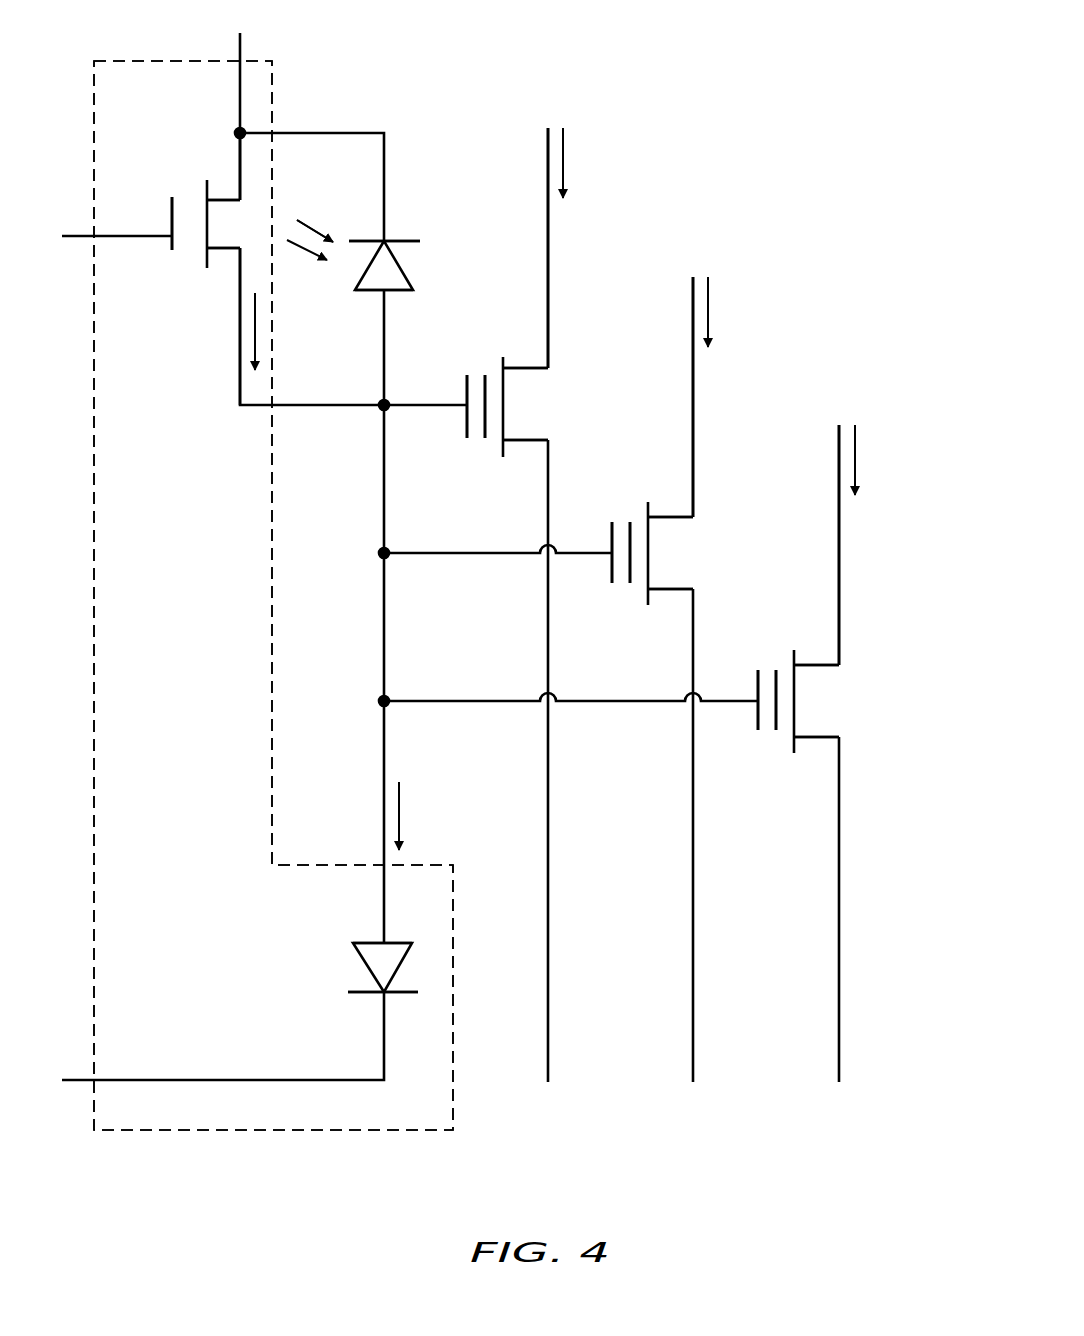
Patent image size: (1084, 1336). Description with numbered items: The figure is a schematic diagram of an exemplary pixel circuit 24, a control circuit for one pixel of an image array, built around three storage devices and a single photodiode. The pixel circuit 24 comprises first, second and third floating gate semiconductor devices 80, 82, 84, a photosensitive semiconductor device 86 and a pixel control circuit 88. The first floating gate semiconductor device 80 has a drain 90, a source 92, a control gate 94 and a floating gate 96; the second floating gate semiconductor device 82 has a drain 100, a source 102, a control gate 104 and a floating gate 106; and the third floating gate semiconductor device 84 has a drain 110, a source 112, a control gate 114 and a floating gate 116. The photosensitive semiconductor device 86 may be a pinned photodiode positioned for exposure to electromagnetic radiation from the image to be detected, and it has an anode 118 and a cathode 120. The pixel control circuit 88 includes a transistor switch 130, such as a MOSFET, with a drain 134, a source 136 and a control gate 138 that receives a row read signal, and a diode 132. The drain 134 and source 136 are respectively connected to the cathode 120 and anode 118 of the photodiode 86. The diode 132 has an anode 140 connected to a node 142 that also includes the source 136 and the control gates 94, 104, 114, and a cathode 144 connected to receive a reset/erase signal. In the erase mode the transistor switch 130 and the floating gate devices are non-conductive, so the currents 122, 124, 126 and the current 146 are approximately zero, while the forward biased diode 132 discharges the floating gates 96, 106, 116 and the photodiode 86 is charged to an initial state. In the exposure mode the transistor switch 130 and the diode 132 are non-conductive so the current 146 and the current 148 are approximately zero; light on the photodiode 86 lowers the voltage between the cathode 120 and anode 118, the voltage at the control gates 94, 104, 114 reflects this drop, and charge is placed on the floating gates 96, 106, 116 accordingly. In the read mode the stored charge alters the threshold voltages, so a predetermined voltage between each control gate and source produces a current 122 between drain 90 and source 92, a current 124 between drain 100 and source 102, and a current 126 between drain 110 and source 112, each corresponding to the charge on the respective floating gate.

The pixel circuit 24 is at (868, 26).
The first floating gate semiconductor device 80 is at (538, 407).
The second floating gate semiconductor device 82 is at (683, 557).
The third floating gate semiconductor device 84 is at (828, 703).
The photosensitive semiconductor device 86 is at (410, 240).
The pixel control circuit 88 is at (271, 1130).
The drain 90 is at (510, 368).
The source 92 is at (512, 443).
The control gate 94 is at (467, 382).
The floating gate 96 is at (485, 440).
The drain 100 is at (657, 517).
The source 102 is at (660, 592).
The control gate 104 is at (612, 530).
The floating gate 106 is at (630, 583).
The drain 110 is at (803, 665).
The source 112 is at (806, 740).
The control gate 114 is at (758, 677).
The floating gate 116 is at (776, 730).
The anode 118 is at (400, 292).
The cathode 120 is at (363, 241).
The current 122 is at (563, 153).
The current 124 is at (708, 300).
The current 126 is at (855, 450).
The transistor switch 130 is at (183, 268).
The diode 132 is at (322, 988).
The drain 134 is at (240, 150).
The source 136 is at (240, 365).
The control gate 138 is at (172, 214).
The anode 140 is at (372, 942).
The node 142 is at (384, 553).
The cathode 144 is at (355, 992).
The current 146 is at (255, 323).
The current 148 is at (399, 808).